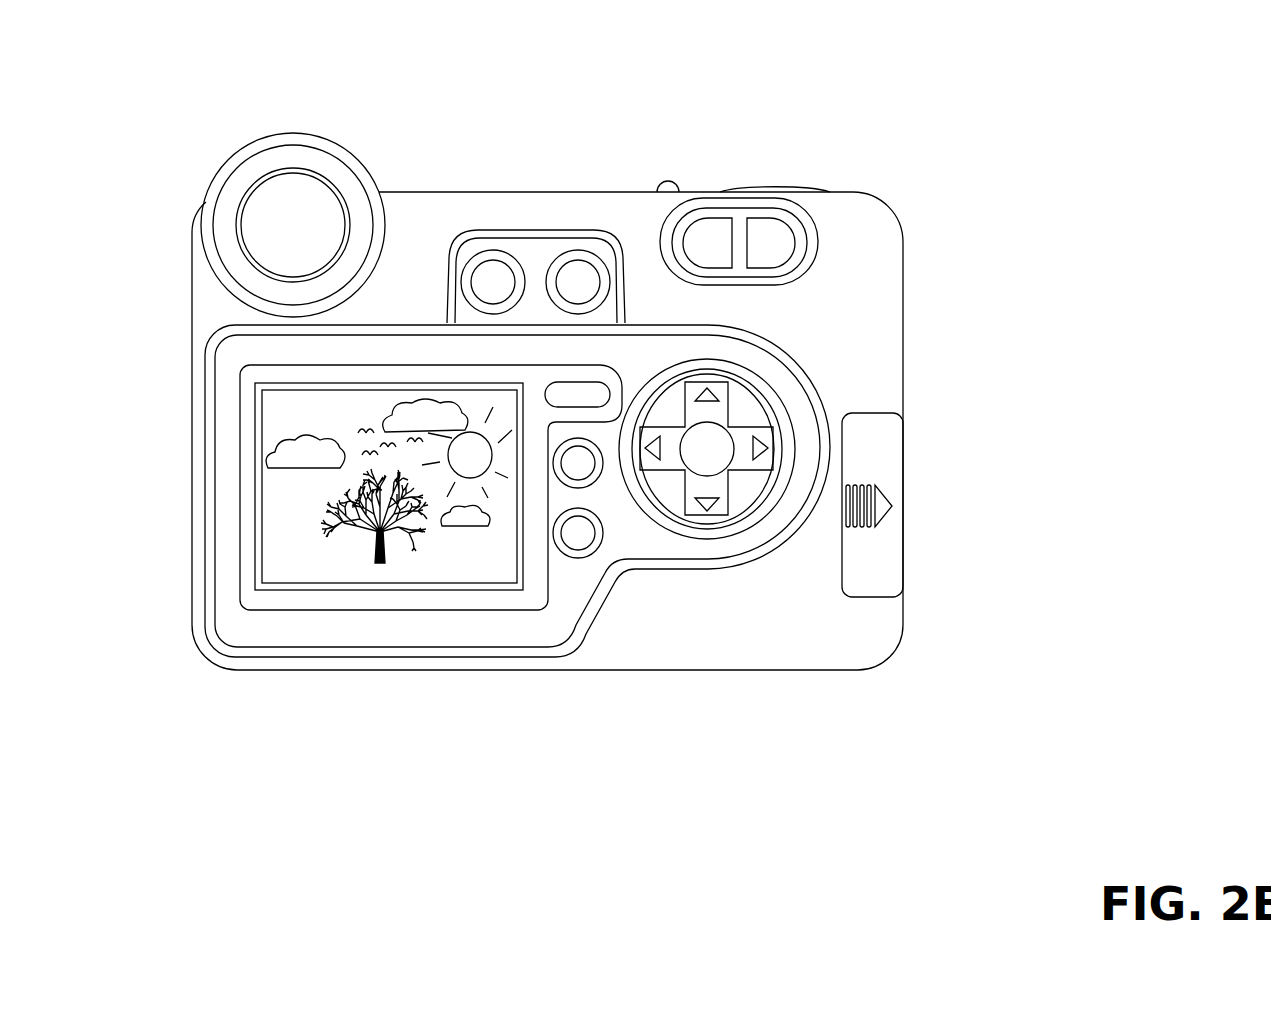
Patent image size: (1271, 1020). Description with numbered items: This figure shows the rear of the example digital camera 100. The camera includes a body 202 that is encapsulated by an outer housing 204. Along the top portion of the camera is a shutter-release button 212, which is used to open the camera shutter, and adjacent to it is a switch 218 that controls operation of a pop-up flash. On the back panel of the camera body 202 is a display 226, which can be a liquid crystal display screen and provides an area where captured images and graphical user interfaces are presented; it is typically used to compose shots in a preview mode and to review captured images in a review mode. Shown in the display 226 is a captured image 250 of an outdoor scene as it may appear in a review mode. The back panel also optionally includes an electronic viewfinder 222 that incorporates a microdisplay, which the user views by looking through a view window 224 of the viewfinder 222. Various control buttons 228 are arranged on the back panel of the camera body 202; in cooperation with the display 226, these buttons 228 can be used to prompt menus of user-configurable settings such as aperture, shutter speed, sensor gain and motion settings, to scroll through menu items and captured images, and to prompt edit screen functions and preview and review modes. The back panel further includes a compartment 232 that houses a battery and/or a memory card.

The digital camera 100 is at (970, 108).
The body 202 is at (912, 219).
The outer housing 204 is at (190, 300).
The shutter-release button 212 is at (767, 183).
The switch 218 is at (668, 183).
The electronic viewfinder 222 is at (250, 142).
The view window 224 is at (247, 198).
The display 226 is at (290, 587).
The control buttons 228 is at (652, 215).
The compartment 232 is at (893, 452).
The captured image 250 is at (288, 532).